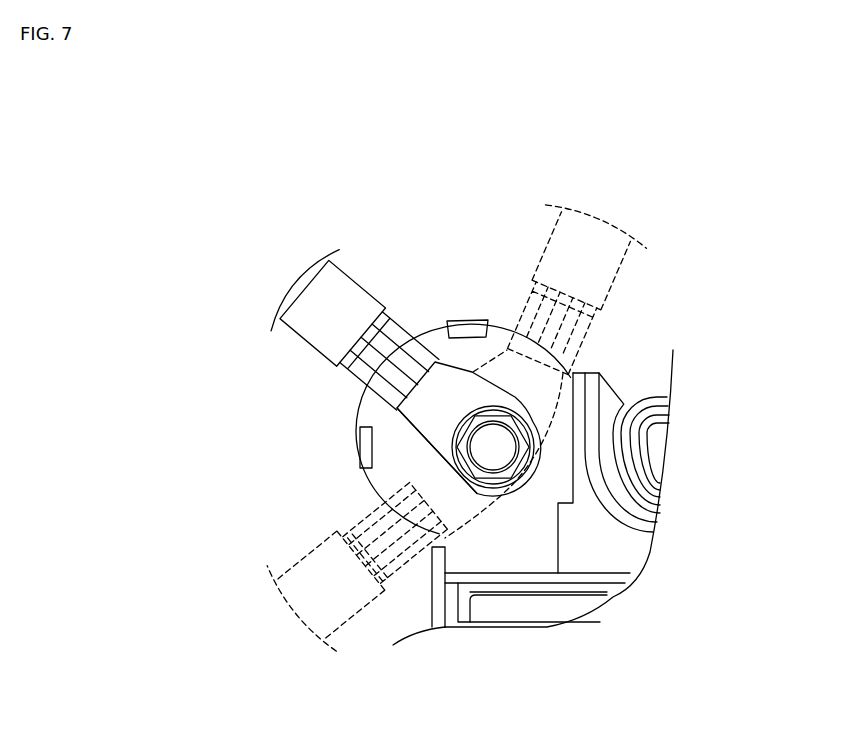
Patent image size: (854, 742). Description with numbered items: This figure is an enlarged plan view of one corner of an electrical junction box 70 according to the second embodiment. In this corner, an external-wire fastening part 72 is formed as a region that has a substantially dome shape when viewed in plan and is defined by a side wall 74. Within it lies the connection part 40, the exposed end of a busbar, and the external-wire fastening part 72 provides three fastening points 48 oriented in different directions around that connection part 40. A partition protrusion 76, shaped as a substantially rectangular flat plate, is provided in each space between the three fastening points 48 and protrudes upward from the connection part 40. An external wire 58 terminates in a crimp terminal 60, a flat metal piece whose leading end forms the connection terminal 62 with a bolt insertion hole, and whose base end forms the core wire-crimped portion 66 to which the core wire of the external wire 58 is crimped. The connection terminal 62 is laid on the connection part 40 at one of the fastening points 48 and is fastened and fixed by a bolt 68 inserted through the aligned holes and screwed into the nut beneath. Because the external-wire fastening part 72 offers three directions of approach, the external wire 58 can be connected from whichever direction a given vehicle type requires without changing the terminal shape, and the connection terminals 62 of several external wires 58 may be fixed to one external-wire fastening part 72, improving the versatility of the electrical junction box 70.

The connection part 40 is at (527, 510).
The fastening points 48 is at (332, 311).
The external wire 58 is at (477, 400).
The crimp terminal 60 is at (440, 333).
The connection terminal 62 is at (433, 425).
The core wire-crimped portion 66 is at (378, 365).
The bolt 68 is at (495, 452).
The electrical junction box 70 is at (487, 82).
The external-wire fastening part 72 is at (478, 278).
The side wall 74 is at (362, 412).
The partition protrusion 76 is at (467, 325).